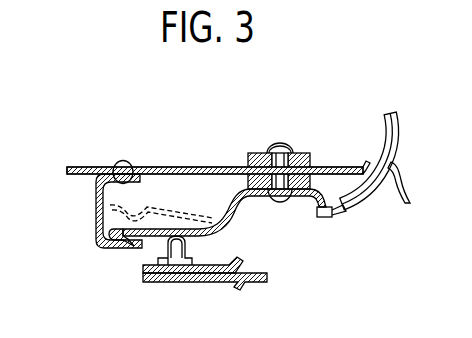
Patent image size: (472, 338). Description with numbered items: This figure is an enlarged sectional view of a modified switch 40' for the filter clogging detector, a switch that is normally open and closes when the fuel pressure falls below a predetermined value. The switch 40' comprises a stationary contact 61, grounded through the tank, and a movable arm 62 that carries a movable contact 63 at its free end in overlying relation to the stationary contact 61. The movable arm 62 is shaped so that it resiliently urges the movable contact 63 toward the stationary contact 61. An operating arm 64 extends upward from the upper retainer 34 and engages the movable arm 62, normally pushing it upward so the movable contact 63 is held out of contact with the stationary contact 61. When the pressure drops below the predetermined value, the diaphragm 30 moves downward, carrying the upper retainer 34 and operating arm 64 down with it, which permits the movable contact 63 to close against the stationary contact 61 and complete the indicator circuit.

The switch 40' is at (238, 157).
The stationary contact 61 is at (104, 250).
The movable arm 62 is at (152, 236).
The movable contact 63 is at (122, 247).
The operating arm 64 is at (187, 247).
The upper retainer 34 is at (223, 264).
The diaphragm 30 is at (253, 279).